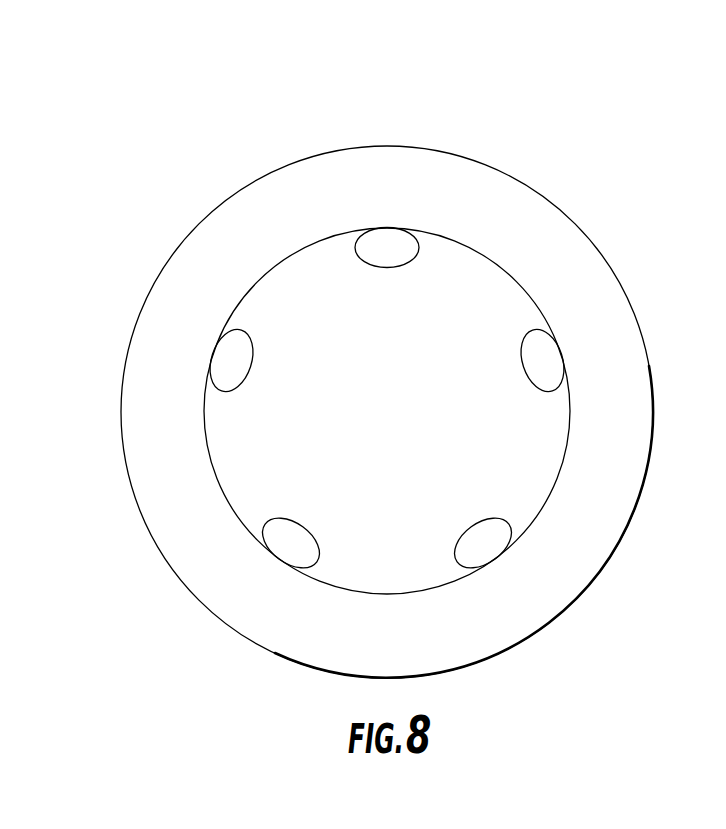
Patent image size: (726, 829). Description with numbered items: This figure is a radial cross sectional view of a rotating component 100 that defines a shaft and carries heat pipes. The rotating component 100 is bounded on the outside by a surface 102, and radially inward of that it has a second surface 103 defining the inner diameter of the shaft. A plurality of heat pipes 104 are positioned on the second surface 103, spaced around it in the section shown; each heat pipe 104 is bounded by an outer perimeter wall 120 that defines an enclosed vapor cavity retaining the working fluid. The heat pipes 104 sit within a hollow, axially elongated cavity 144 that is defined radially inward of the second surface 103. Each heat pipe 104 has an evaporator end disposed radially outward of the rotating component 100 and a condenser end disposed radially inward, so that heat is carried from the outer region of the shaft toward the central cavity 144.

The rotating component 100 is at (542, 92).
The surface 102 is at (574, 220).
The second surface 103 is at (288, 258).
The heat pipe 104 is at (248, 360).
The outer perimeter wall 120 is at (303, 533).
The axially elongated cavity 144 is at (413, 426).